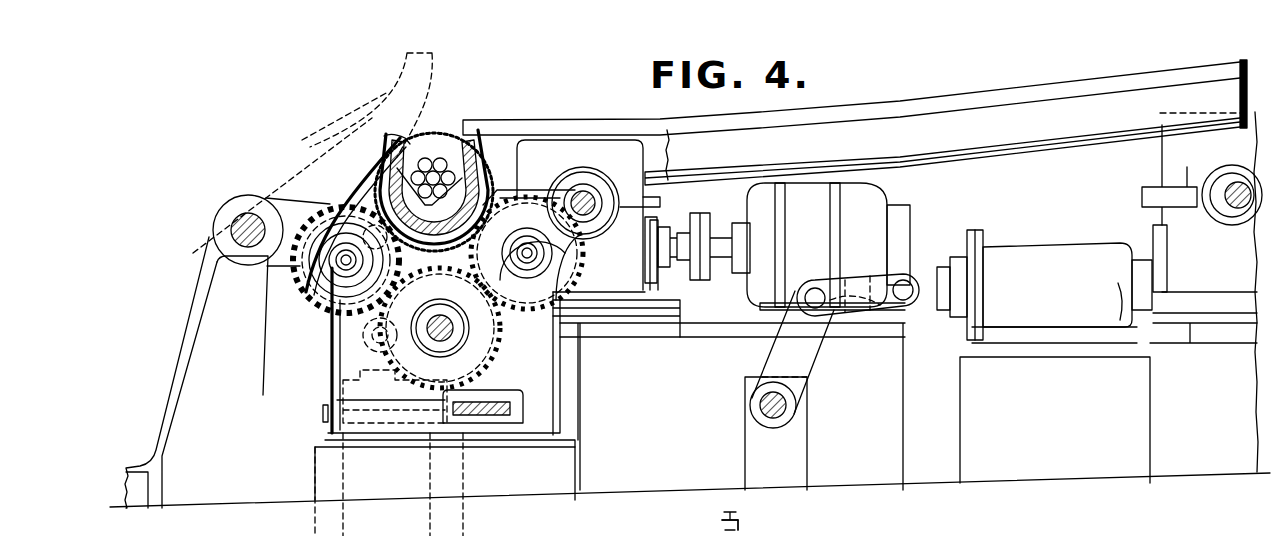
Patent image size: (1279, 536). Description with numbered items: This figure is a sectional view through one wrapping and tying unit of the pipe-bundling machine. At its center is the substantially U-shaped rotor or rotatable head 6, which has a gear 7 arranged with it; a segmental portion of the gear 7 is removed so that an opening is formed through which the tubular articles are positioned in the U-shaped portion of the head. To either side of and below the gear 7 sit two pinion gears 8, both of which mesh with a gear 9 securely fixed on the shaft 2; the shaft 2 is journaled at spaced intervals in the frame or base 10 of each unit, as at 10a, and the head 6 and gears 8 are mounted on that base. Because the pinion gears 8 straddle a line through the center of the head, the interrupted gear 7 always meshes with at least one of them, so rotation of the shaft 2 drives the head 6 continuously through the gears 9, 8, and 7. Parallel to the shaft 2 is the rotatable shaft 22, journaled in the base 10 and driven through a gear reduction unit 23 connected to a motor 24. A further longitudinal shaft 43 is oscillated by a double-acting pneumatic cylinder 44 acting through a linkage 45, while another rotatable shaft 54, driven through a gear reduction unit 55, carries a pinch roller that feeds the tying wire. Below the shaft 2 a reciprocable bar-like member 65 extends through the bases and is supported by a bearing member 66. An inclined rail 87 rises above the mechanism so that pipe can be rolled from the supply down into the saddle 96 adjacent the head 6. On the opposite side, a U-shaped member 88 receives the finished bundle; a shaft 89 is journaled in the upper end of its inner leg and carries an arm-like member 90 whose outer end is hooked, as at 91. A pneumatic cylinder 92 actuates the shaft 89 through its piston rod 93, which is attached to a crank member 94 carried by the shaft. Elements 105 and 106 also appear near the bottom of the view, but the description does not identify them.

The shaft 2 is at (457, 332).
The rotatable head 6 is at (472, 152).
The gear 7 is at (479, 134).
The pinion gear 8 is at (305, 292).
The gear 9 is at (488, 352).
The base 10 is at (326, 340).
The journal 10a is at (460, 337).
The rotatable shaft 22 is at (577, 192).
The gear reduction unit 23 is at (607, 150).
The motor 24 is at (818, 238).
The shaft 43 is at (787, 408).
The double-acting pneumatic cylinder 44 is at (1035, 260).
The linkage 45 is at (872, 302).
The rotatable shaft 54 is at (1233, 187).
The gear reduction unit 55 is at (1230, 285).
The reciprocable bar-like member 65 is at (480, 415).
The bearing member 66 is at (517, 397).
The inclined rail 87 is at (918, 103).
The U-shaped member 88 is at (195, 322).
The shaft 89 is at (238, 230).
The arm-like member 90 is at (305, 202).
The hooked end 91 is at (406, 76).
The pneumatic cylinder 92 is at (345, 472).
The piston rod 93 is at (340, 366).
The crank member 94 is at (287, 203).
The saddle 96 is at (397, 127).
The bolt 105 is at (700, 528).
The nut 106 is at (776, 528).